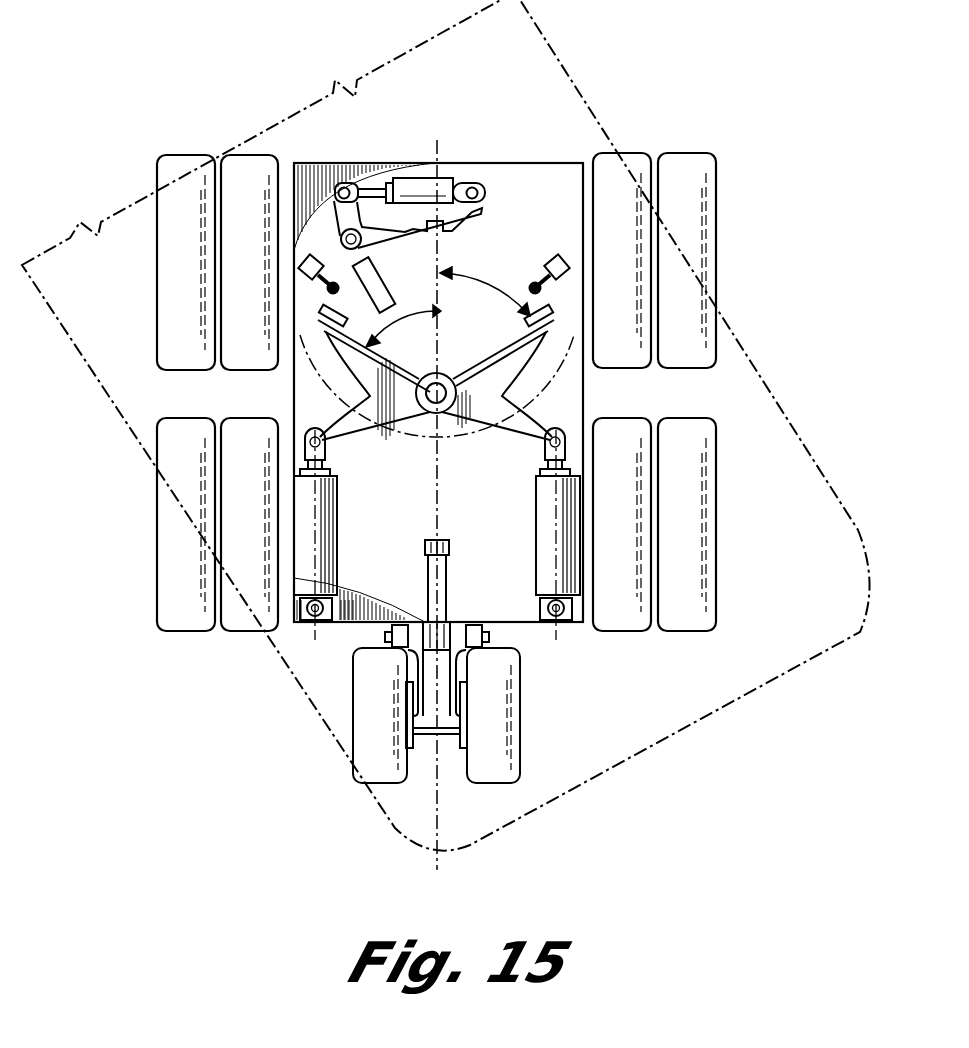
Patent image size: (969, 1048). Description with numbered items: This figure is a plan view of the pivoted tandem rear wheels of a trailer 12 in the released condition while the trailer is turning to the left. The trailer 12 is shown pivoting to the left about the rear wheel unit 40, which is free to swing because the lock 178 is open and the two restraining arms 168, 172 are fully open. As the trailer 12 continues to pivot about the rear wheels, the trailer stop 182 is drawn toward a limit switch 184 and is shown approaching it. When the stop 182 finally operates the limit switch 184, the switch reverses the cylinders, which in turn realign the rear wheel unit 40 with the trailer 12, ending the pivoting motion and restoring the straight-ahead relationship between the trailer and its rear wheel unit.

The trailer 12 is at (552, 80).
The rear wheel unit 40 is at (293, 381).
The restraining arm 168 is at (502, 423).
The restraining arm 172 is at (375, 423).
The lock 178 is at (466, 217).
The trailer stop 182 is at (369, 277).
The limit switch 184 is at (301, 283).